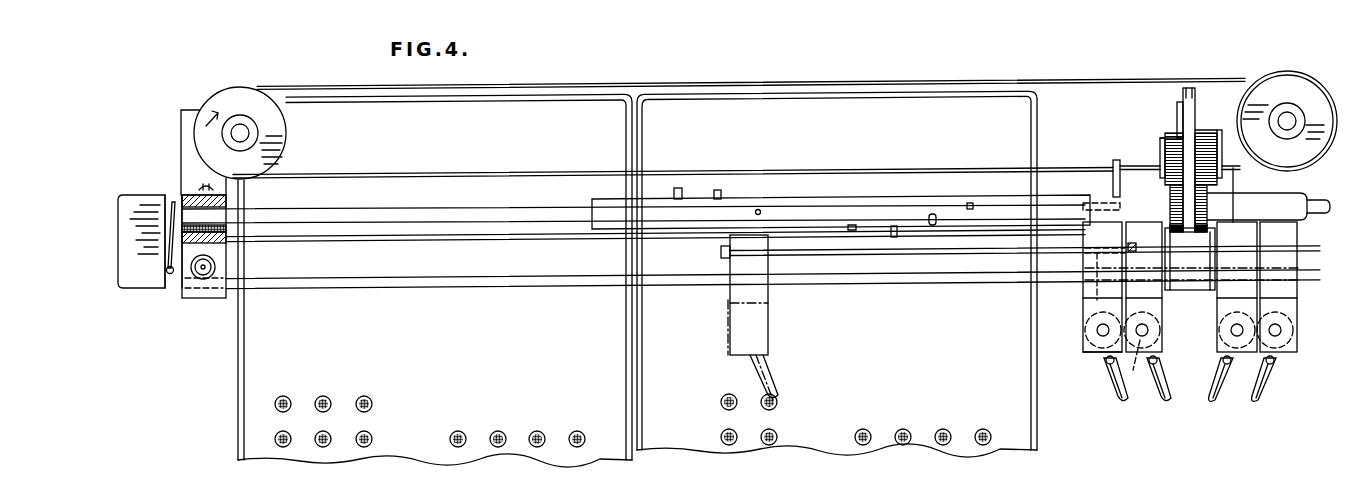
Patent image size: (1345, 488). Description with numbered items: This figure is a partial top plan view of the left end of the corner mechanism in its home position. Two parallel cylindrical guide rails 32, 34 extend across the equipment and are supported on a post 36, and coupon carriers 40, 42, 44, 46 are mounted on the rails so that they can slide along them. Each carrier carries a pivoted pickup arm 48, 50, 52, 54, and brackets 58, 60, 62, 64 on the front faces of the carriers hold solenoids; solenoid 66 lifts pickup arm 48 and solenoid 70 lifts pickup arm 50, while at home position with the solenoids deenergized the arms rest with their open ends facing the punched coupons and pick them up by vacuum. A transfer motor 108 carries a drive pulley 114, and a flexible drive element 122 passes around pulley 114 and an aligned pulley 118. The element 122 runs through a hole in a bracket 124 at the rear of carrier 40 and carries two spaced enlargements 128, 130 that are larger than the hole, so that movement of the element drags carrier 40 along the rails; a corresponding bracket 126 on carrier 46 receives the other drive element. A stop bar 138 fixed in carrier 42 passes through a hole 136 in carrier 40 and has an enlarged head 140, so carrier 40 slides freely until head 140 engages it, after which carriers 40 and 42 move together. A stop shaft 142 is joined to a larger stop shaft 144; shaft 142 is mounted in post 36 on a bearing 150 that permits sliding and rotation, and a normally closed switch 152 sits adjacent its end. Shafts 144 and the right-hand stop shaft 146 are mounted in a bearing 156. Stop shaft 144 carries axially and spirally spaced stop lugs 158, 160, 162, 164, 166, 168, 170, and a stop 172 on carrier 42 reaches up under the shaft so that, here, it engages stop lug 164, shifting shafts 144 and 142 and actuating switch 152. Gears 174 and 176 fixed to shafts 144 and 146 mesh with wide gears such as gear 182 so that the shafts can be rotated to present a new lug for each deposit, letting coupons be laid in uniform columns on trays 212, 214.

The guide rail 32 is at (480, 290).
The guide rail 34 is at (455, 245).
The post 36 is at (205, 298).
The coupon carrier 40 is at (1092, 310).
The coupon carrier 42 is at (1145, 290).
The coupon carrier 44 is at (1228, 284).
The coupon carrier 46 is at (1275, 285).
The pickup arm 48 is at (1112, 382).
The pickup arm 50 is at (1160, 392).
The pickup arm 52 is at (1222, 392).
The pickup arm 54 is at (1262, 392).
The bracket 58 is at (1090, 336).
The bracket 60 is at (1150, 340).
The bracket 62 is at (1225, 340).
The bracket 64 is at (1280, 343).
The solenoid 66 is at (1086, 354).
The solenoid 70 is at (1140, 365).
The transfer motor 108 is at (1233, 107).
The drive pulley 114 is at (1285, 90).
The pulley 118 is at (238, 95).
The flexible drive element 122 is at (655, 86).
The bracket 124 is at (1112, 180).
The bracket 126 is at (1262, 176).
The enlargement 128 is at (1113, 165).
The enlargement 130 is at (1160, 165).
The hole 136 is at (1083, 284).
The stop bar 138 is at (795, 262).
The head 140 is at (721, 252).
The stop shaft 142 is at (475, 210).
The stop shaft 144 is at (785, 210).
The stop shaft 146 is at (1280, 205).
The bearing 150 is at (192, 200).
The normally closed switch 152 is at (141, 288).
The bearing 156 is at (1207, 212).
The stop lug 158 is at (985, 185).
The stop lug 160 is at (935, 228).
The stop lug 162 is at (893, 238).
The stop lug 164 is at (855, 225).
The stop lug 166 is at (760, 208).
The stop lug 168 is at (722, 190).
The stop lug 170 is at (680, 188).
The stop 172 is at (1158, 195).
The gear 174 is at (1178, 235).
The gear 176 is at (1208, 233).
The gear 182 is at (1170, 133).
The tray 212 is at (430, 448).
The tray 214 is at (823, 430).